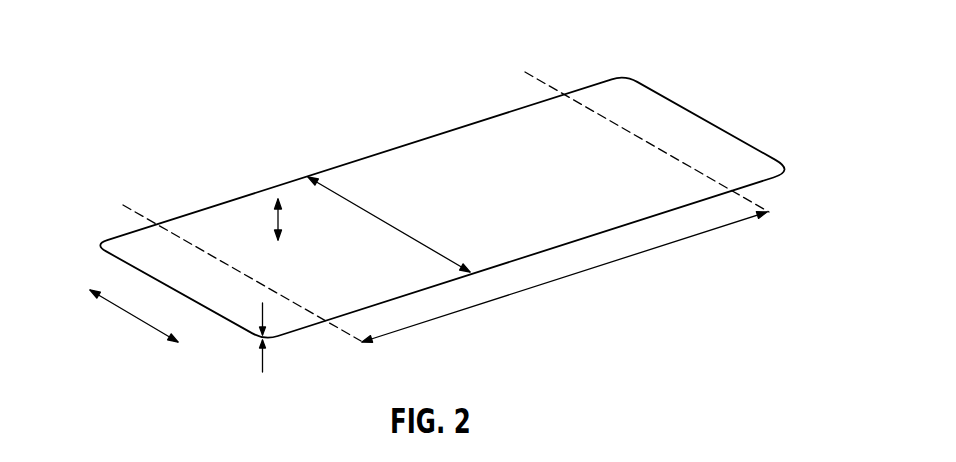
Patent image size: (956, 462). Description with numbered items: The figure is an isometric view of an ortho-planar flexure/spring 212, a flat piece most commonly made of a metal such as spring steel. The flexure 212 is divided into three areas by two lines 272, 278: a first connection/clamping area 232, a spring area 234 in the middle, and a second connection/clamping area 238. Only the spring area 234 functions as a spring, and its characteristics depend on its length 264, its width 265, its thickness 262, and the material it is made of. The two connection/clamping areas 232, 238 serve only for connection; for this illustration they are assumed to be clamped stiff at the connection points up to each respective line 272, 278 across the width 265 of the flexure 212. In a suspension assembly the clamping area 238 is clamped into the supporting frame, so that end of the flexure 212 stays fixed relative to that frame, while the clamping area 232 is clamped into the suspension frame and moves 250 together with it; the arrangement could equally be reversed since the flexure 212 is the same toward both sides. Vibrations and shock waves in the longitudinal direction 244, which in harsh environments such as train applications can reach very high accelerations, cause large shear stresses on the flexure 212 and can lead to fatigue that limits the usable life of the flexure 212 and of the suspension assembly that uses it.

The flexure/spring 212 is at (742, 122).
The first connection/clamping area 232 is at (115, 247).
The second connection/clamping area 238 is at (645, 100).
The flexure/spring area 234 is at (478, 136).
The flexure/spring area border line 272 is at (123, 205).
The flexure/spring area border line 278 is at (539, 75).
The length of flexure/spring area 264 is at (563, 278).
The width of flexure/spring area 265 is at (333, 193).
The longitudinal direction 244 is at (133, 316).
The direction of movement 250 is at (276, 213).
The thickness of flexure/spring 262 is at (263, 364).